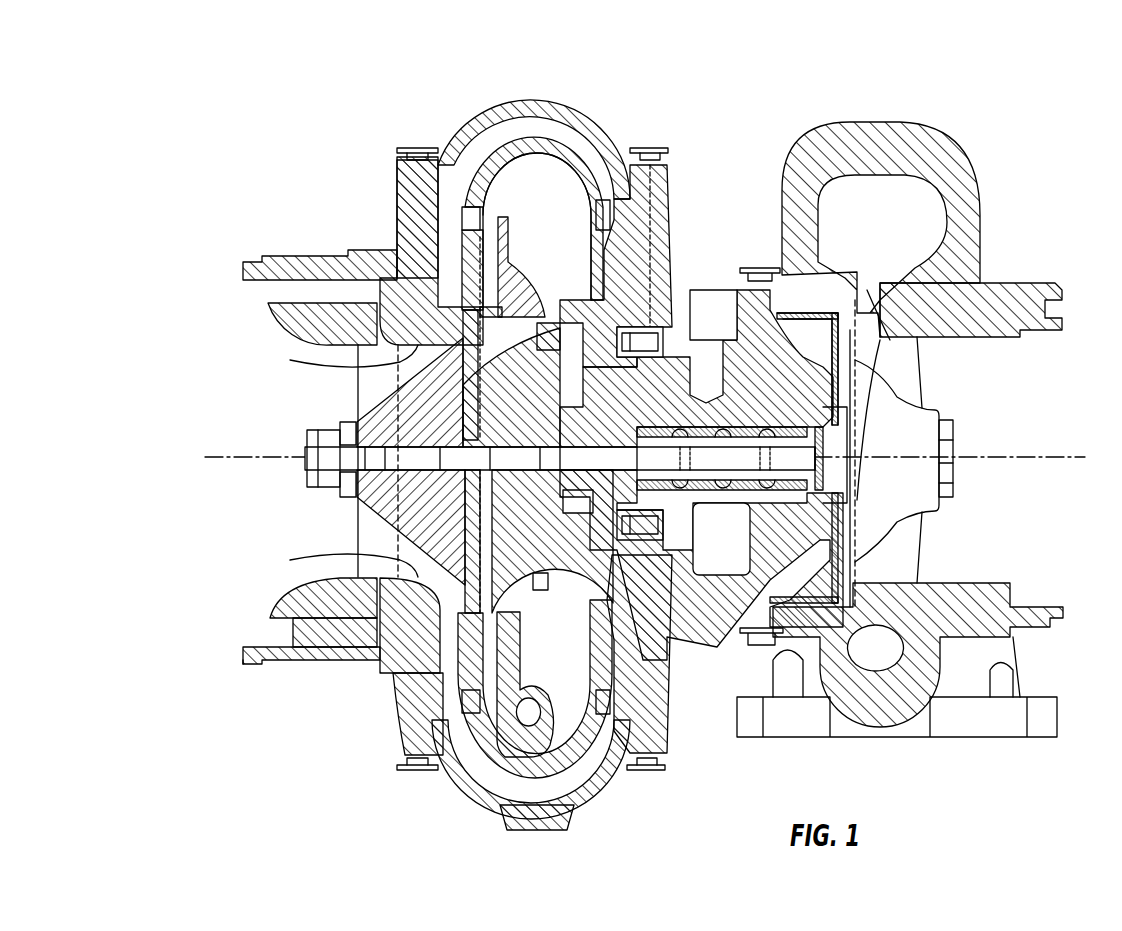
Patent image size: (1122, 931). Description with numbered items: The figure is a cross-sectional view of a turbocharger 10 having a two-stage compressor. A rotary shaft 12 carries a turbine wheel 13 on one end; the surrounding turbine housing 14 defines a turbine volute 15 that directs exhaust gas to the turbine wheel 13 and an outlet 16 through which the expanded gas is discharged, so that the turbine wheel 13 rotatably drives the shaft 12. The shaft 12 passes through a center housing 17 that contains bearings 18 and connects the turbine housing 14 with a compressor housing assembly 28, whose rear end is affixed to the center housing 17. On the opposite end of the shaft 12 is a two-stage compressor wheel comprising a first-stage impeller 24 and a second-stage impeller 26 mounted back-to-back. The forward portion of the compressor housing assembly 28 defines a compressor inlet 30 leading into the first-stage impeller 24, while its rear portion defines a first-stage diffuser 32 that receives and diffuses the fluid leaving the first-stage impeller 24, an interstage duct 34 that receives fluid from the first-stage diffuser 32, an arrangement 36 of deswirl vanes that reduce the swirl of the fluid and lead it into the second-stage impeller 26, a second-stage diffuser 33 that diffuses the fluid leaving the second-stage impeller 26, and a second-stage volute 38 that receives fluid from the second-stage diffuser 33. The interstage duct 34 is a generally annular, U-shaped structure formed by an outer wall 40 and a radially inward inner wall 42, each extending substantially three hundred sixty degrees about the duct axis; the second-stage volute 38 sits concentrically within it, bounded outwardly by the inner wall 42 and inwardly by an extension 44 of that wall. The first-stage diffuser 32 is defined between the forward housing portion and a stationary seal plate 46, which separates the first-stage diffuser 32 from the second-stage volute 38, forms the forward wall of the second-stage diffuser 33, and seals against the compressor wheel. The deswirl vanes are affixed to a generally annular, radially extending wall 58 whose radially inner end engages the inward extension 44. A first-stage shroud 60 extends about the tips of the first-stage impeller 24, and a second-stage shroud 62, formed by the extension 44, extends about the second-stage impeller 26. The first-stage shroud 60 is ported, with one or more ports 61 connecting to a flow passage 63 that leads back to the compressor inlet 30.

The turbocharger 10 is at (833, 92).
The rotary shaft 12 is at (314, 432).
The turbine wheel 13 is at (883, 423).
The turbine housing 14 is at (985, 295).
The turbine volute 15 is at (905, 190).
The outlet 16 is at (975, 528).
The center housing 17 is at (732, 640).
The bearings 18 is at (705, 525).
The first-stage impeller 24 is at (378, 502).
The second-stage impeller 26 is at (555, 530).
The compressor housing assembly 28 is at (613, 797).
The compressor inlet 30 is at (300, 556).
The first-stage diffuser 32 is at (447, 272).
The second-stage diffuser 33 is at (447, 250).
The interstage duct 34 is at (486, 140).
The arrangement of deswirl vanes 36 is at (627, 228).
The second-stage volute 38 is at (547, 167).
The outer wall 40 is at (537, 99).
The inner wall 42 is at (512, 772).
The extension 44 is at (560, 277).
The stationary seal plate 46 is at (400, 700).
The wall 58 is at (590, 318).
The first-stage shroud 60 is at (413, 347).
The ports 61 is at (365, 615).
The second-stage shroud 62 is at (505, 345).
The flow passage 63 is at (307, 292).